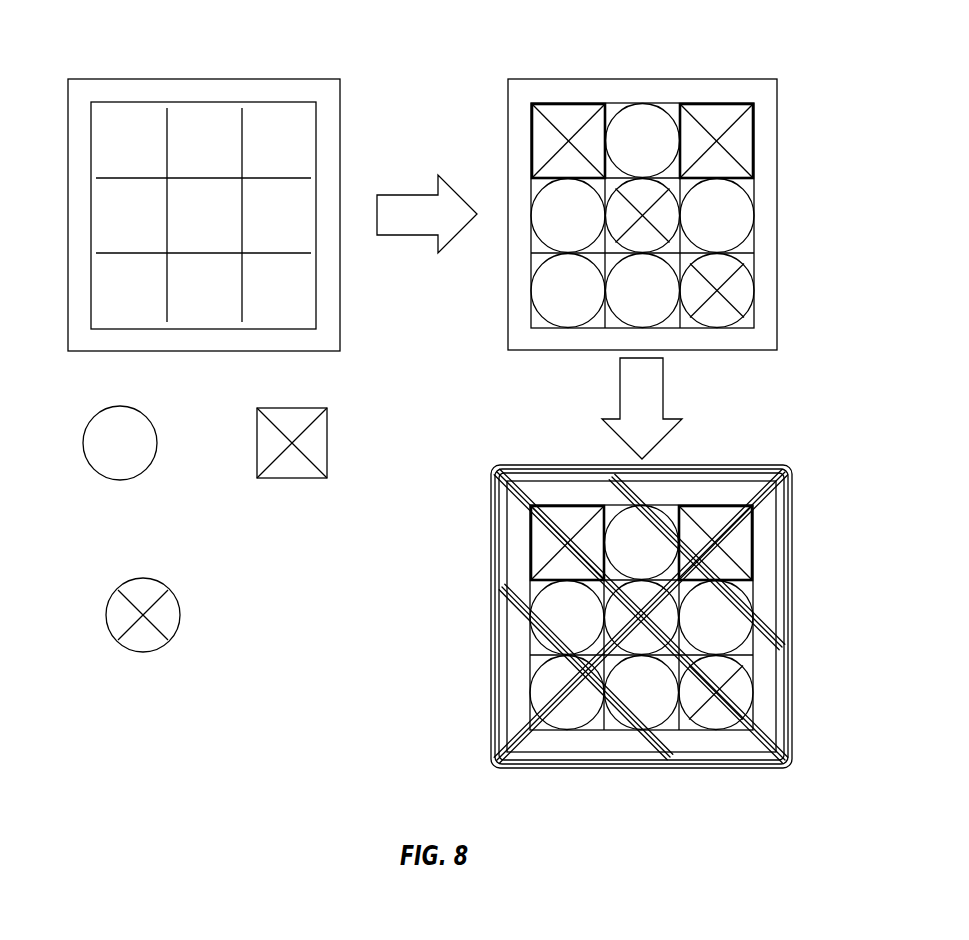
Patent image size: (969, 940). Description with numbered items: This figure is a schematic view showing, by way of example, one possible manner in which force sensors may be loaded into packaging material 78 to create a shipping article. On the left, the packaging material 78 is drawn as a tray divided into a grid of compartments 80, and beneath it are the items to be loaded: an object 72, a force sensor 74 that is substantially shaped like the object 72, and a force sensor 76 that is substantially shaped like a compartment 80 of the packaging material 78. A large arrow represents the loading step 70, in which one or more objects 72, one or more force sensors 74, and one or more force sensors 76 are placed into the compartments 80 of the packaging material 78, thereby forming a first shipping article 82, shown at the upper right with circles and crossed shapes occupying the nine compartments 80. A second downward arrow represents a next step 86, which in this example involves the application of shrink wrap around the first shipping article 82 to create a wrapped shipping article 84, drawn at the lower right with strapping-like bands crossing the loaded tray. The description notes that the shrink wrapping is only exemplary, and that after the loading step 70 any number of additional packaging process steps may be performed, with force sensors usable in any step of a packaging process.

The loading step 70 is at (407, 236).
The object 72 is at (98, 425).
The force sensor 74 is at (177, 617).
The force sensor 76 is at (298, 473).
The packaging material 78 is at (340, 125).
The compartment 80 is at (203, 122).
The first shipping article 82 is at (773, 52).
The wrapped shipping article 84 is at (771, 431).
The next step 86 is at (620, 388).